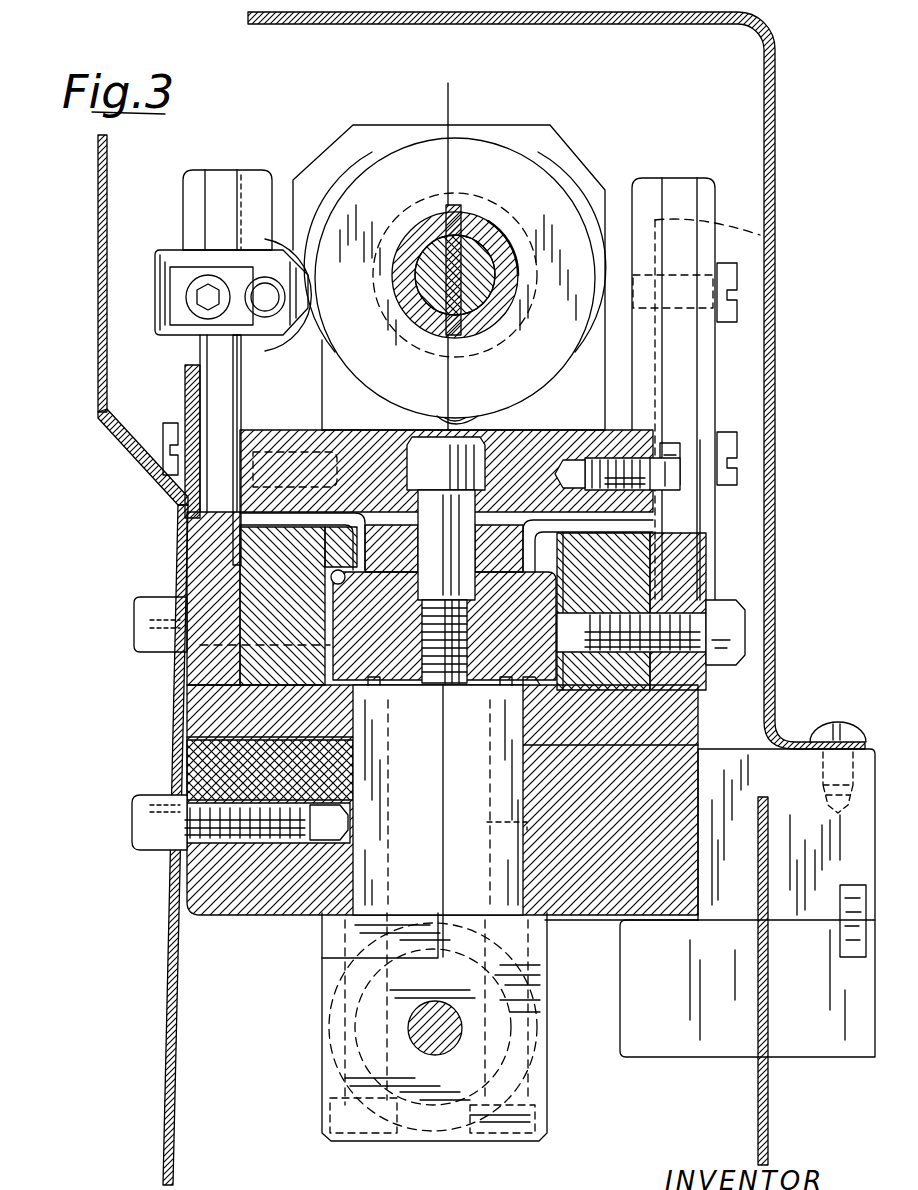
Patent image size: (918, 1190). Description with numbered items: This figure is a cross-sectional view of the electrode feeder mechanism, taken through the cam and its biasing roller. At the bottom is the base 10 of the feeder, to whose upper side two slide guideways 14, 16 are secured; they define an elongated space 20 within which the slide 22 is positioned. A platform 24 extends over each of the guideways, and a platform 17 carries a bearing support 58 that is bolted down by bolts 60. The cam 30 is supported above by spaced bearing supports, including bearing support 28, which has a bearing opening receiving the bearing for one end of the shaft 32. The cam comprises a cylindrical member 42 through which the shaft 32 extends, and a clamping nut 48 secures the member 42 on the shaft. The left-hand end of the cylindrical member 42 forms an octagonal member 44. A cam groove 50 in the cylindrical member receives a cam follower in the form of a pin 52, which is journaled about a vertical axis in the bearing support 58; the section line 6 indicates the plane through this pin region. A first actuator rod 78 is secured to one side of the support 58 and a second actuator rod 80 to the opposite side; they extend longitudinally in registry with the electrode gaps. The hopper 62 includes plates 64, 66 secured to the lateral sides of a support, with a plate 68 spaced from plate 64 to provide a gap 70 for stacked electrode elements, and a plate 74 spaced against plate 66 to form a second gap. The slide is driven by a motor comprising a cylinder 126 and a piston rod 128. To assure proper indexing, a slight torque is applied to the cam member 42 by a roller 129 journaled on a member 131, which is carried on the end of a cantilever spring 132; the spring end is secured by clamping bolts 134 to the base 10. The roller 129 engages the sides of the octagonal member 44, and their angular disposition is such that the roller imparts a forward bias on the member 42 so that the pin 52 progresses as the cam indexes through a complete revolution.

The section line 6 is at (448, 83).
The base 10 is at (226, 914).
The slide guideway 14 is at (255, 665).
The slide guideway 16 is at (706, 600).
The platform 17 is at (496, 692).
The elongated space 20 is at (335, 586).
The slide 22 is at (405, 662).
The platform 24 is at (385, 550).
The bearing support 28 is at (472, 238).
The cam 30 is at (350, 148).
The shaft 32 is at (512, 212).
The cylindrical member 42 is at (532, 158).
The octagonal member 44 is at (365, 185).
The clamping nut 48 is at (458, 205).
The cam groove 50 is at (520, 113).
The pin 52 is at (500, 418).
The bearing support 58 is at (255, 500).
The bolt 60 is at (415, 465).
The hopper 62 is at (202, 236).
The plate 64 is at (696, 190).
The plate 66 is at (212, 392).
The plate 68 is at (710, 337).
The gap 70 is at (770, 236).
The plate 74 is at (192, 197).
The first actuator rod 78 is at (698, 522).
The second actuator rod 80 is at (240, 513).
The cylinder 126 is at (322, 1012).
The piston rod 128 is at (410, 1035).
The roller 129 is at (258, 362).
The member 131 is at (160, 282).
The cantilever spring 132 is at (168, 406).
The clamping bolt 134 is at (150, 820).